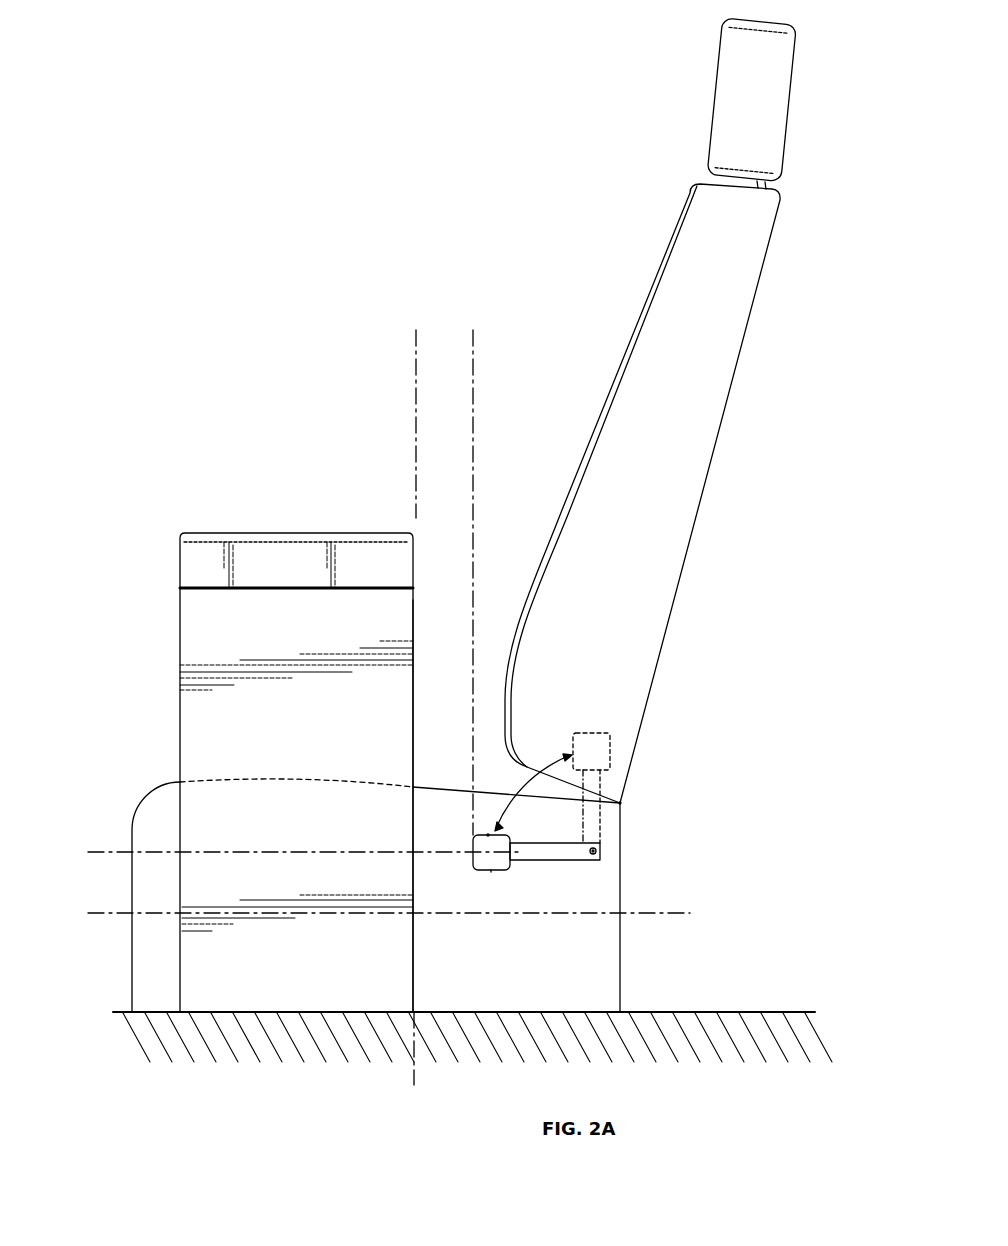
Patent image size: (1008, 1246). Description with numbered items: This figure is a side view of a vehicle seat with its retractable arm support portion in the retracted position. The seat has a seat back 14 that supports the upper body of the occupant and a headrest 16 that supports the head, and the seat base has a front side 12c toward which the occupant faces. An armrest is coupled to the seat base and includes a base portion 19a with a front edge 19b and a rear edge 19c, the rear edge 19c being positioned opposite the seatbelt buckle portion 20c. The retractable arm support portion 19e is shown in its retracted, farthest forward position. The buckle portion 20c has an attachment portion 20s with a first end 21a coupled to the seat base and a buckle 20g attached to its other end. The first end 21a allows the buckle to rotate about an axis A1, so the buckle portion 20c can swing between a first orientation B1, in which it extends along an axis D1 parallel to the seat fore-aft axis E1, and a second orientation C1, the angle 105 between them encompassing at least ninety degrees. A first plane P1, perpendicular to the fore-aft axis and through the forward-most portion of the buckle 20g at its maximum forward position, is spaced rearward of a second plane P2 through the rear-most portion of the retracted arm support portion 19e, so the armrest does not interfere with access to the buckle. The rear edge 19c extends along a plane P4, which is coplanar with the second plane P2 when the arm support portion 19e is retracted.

The headrest 16 is at (772, 90).
The seat back 14 is at (735, 235).
The base portion 19a is at (228, 771).
The front edge 19b is at (180, 622).
The rear edge 19c is at (413, 673).
The retractable arm support portion 19e is at (302, 533).
The front side 12c is at (131, 968).
The buckle 20g is at (484, 872).
The attachment portion 20s is at (533, 858).
The buckle portion 20c is at (496, 871).
The first end 21a is at (600, 851).
The angle 105 is at (512, 797).
The first plane P1 is at (478, 400).
The second plane P2 is at (413, 418).
The plane P4 is at (412, 1075).
The axis D1 is at (98, 852).
The seat fore-aft axis E1 is at (688, 913).
The axis A1 is at (605, 860).
The first orientation B1 is at (484, 830).
The second orientation C1 is at (610, 752).